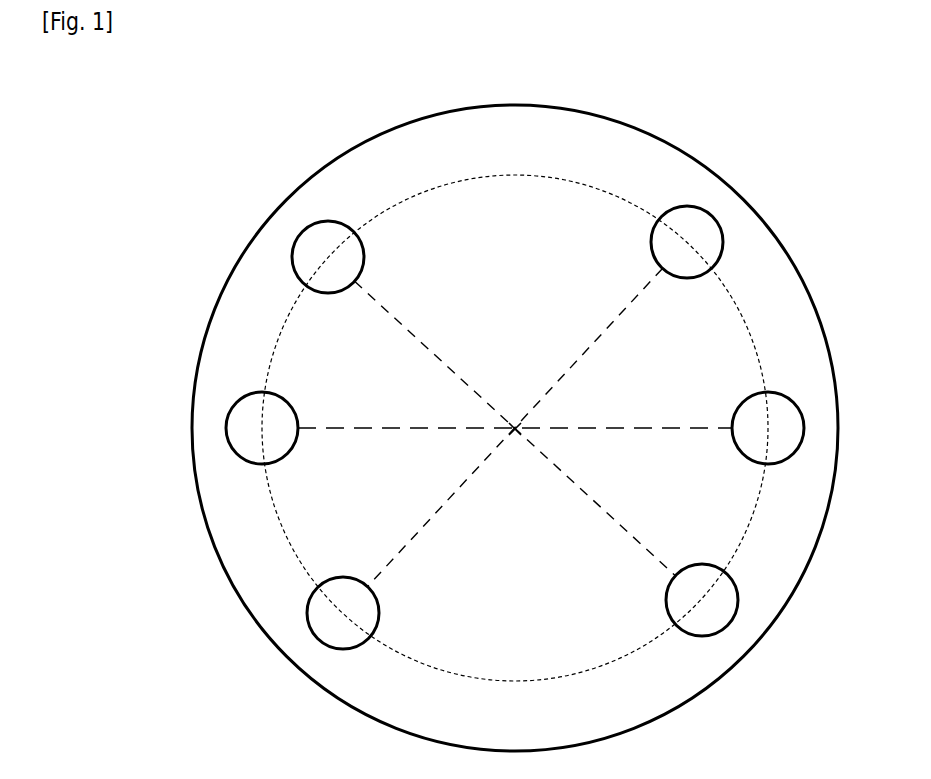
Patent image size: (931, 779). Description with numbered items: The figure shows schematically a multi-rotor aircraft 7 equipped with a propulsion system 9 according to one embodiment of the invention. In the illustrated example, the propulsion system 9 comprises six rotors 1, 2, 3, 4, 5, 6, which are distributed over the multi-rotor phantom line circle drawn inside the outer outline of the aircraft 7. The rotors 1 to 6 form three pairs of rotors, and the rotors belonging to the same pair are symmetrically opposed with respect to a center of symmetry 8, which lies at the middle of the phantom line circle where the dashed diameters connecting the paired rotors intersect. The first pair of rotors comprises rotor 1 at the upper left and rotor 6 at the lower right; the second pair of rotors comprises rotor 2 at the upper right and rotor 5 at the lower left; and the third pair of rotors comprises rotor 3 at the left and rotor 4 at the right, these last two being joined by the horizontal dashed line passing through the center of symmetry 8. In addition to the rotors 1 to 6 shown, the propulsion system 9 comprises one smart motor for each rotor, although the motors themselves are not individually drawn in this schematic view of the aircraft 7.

The rotor 1 is at (320, 270).
The rotor 2 is at (679, 255).
The rotor 3 is at (254, 441).
The rotor 4 is at (760, 441).
The rotor 5 is at (335, 626).
The rotor 6 is at (694, 613).
The multi-rotor aircraft 7 is at (505, 632).
The center of symmetry 8 is at (515, 434).
The propulsion system 9 is at (800, 274).